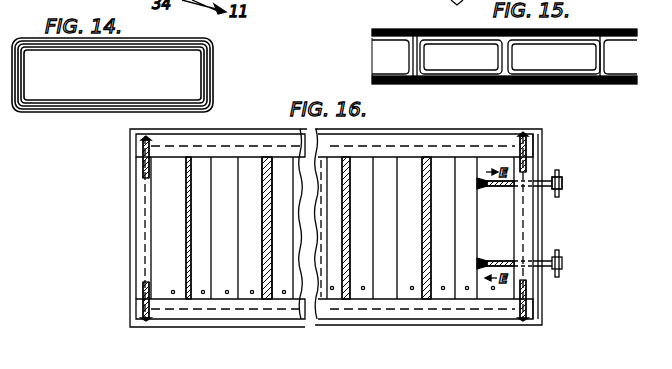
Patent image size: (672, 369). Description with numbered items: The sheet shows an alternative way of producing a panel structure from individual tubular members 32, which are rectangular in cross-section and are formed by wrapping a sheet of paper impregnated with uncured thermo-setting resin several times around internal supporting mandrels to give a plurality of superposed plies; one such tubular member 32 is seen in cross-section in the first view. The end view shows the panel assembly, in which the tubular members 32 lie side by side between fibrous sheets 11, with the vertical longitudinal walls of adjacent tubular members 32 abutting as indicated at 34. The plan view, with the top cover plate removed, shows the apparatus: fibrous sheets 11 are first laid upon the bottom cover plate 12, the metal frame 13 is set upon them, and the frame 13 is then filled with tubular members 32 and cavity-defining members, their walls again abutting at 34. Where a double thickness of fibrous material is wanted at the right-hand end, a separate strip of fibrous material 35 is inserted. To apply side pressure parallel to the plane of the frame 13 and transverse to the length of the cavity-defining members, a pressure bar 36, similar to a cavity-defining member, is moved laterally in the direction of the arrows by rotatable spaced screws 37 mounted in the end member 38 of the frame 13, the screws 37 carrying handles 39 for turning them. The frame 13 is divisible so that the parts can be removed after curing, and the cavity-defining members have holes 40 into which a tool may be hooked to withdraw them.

In FIG. 15, the fibrous sheets 11 is at (447, 29).
In FIG. 16, the bottom cover plate 12 is at (545, 311).
In FIG. 16, the metal frame 13 is at (132, 201).
In FIG. 14, the tubular channel defining web forming members 32 is at (215, 58).
In FIG. 15, the tubular channel defining web forming members 32 is at (398, 71).
In FIG. 15, the abutting walls of adjacent tubular members 34 is at (500, 57).
In FIG. 16, the abutting walls of adjacent tubular members 34 is at (262, 231).
In FIG. 16, the strip of fibrous material 35 is at (431, 293).
In FIG. 16, the pressure bar 36 is at (470, 216).
In FIG. 16, the rotatable spaced screws 37 is at (553, 171).
In FIG. 16, the end member 38 is at (534, 229).
In FIG. 16, the handles 39 is at (564, 184).
In FIG. 16, the holes 40 is at (173, 290).